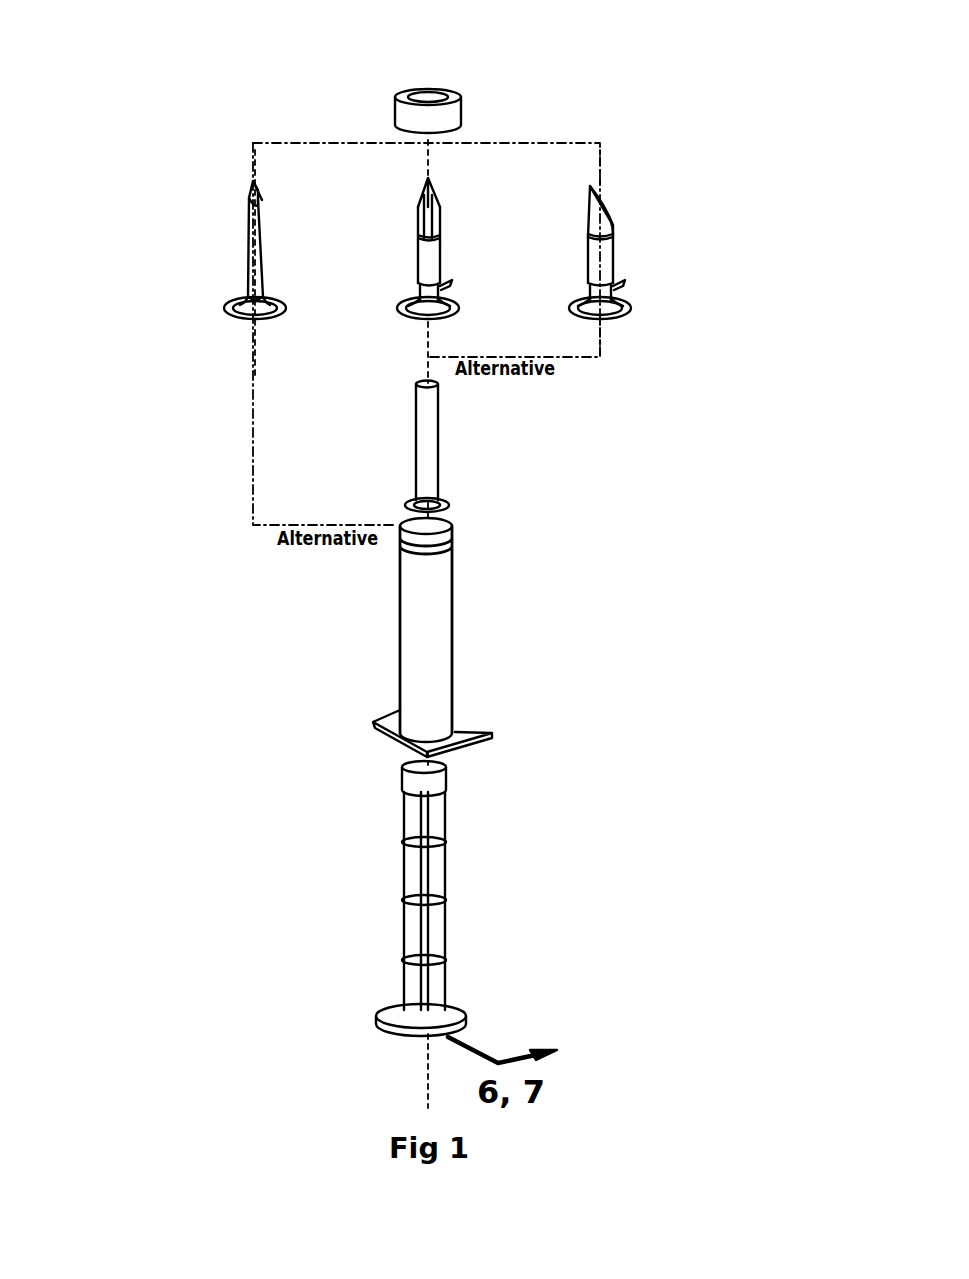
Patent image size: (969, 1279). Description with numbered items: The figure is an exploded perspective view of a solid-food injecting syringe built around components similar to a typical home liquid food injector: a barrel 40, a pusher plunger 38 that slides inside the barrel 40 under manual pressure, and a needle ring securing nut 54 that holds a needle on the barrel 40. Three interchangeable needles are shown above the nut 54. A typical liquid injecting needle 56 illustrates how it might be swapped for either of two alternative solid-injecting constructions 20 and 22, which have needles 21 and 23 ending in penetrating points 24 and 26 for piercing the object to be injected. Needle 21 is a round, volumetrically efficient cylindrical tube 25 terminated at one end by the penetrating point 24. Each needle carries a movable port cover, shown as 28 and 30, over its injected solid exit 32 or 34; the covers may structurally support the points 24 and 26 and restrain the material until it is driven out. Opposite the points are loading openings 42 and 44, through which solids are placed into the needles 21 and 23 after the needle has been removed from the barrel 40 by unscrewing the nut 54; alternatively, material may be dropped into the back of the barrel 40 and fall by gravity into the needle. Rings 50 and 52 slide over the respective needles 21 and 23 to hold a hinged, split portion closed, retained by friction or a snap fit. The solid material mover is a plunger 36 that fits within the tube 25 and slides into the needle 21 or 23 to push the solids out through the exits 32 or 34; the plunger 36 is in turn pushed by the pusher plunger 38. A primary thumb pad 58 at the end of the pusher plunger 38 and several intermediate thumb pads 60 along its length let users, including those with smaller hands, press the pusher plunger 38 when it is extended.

The alternative construction 20 is at (418, 318).
The needle 21 is at (413, 295).
The alternative construction 22 is at (617, 288).
The needle 23 is at (578, 302).
The penetrating point 24 is at (422, 188).
The cylindrical tube 25 is at (413, 255).
The penetrating point 26 is at (590, 188).
The movable port cover 28 is at (440, 197).
The movable port cover 30 is at (615, 210).
The injected solid exit 32 is at (420, 200).
The injected solid exit 34 is at (605, 202).
The plunger 36 is at (423, 449).
The pusher plunger 38 is at (413, 813).
The barrel 40 is at (418, 625).
The opening 42 is at (430, 346).
The opening 44 is at (590, 320).
The ring 50 is at (413, 218).
The ring 52 is at (615, 248).
The needle ring securing nut 54 is at (427, 127).
The liquid injecting needle 56 is at (246, 280).
The primary thumb pad 58 is at (393, 1010).
The intermediate thumb pads 60 is at (405, 958).